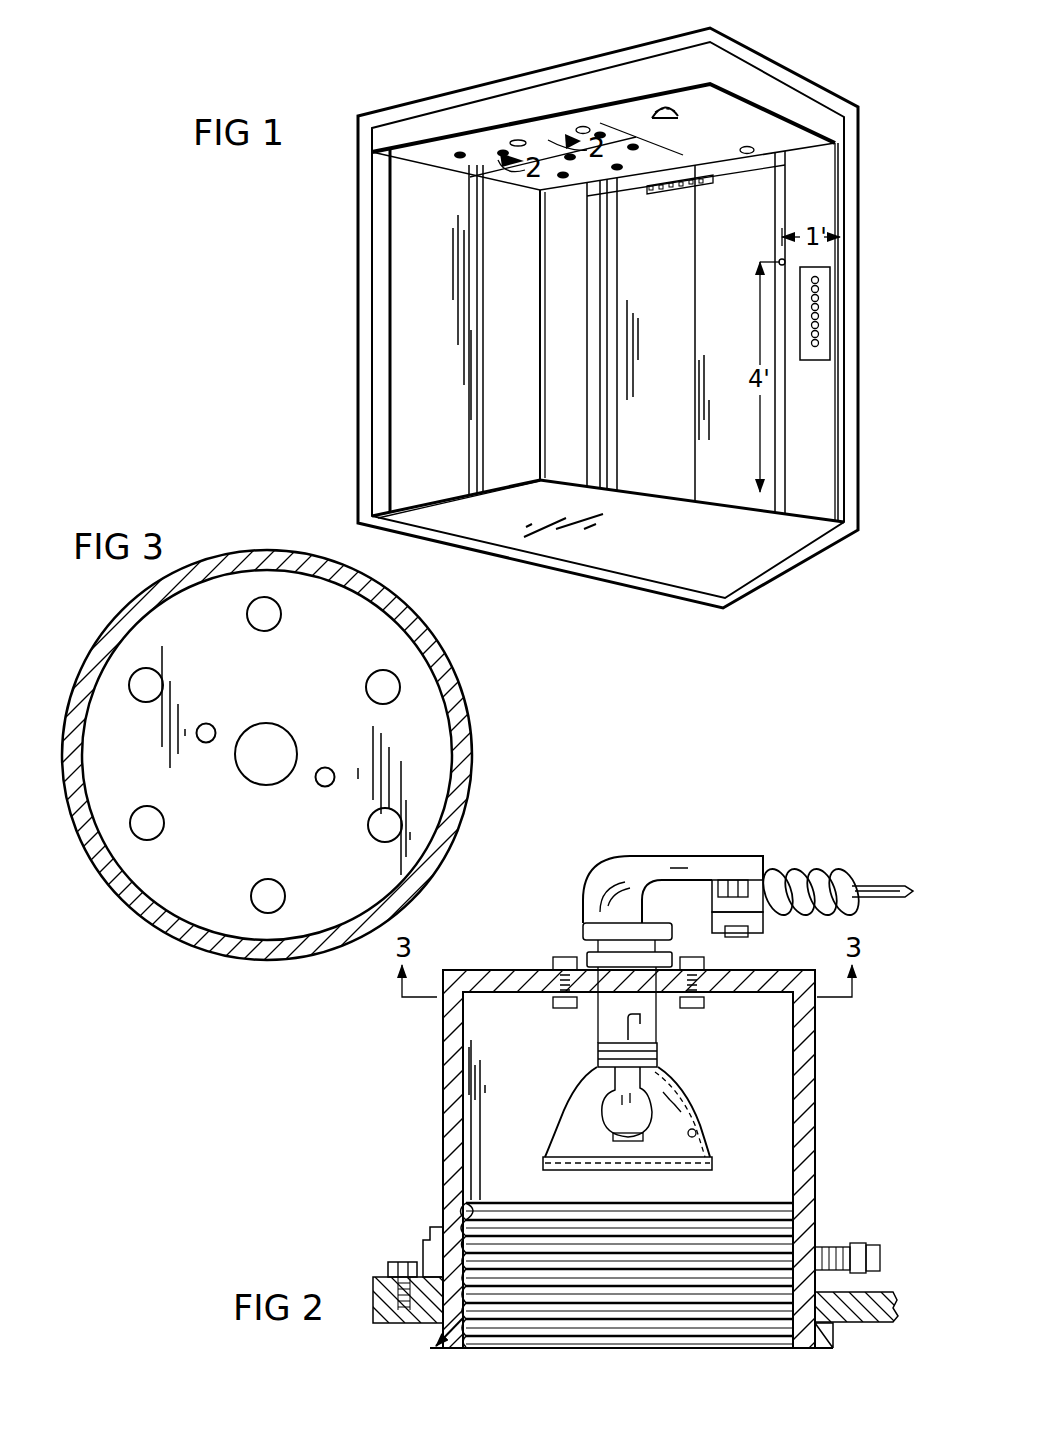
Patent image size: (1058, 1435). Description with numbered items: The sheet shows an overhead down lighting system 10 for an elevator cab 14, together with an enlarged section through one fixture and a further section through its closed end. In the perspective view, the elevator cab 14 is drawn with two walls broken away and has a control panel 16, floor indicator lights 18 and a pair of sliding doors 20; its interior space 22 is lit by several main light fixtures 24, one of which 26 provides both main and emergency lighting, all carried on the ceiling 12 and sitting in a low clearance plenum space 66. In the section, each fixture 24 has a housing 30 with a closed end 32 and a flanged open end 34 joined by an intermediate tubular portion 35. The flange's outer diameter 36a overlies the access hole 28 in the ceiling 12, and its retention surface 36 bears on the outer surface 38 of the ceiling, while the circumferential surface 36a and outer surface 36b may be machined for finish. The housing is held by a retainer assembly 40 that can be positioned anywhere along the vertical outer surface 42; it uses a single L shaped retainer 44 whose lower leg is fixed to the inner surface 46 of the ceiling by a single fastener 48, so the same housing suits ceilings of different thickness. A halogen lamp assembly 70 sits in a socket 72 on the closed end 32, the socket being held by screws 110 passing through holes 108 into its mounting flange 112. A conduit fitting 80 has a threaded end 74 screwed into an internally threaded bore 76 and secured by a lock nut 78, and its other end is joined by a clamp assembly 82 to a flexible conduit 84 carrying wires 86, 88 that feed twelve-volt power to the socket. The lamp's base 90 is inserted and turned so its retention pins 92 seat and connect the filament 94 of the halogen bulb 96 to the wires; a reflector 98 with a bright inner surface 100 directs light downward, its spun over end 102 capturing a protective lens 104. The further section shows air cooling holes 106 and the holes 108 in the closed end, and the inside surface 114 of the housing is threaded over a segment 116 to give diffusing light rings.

In FIG. 1, the down lighting system 10 is at (800, 108).
In FIG. 1, the ceiling 12 is at (762, 102).
In FIG. 2, the ceiling 12 is at (373, 1312).
In FIG. 1, the elevator cab 14 is at (858, 278).
In FIG. 1, the control panel 16 is at (833, 333).
In FIG. 1, the floor indicator lights 18 is at (701, 200).
In FIG. 1, the sliding doors 20 is at (757, 500).
In FIG. 1, the interior space 22 is at (587, 458).
In FIG. 1, the main light fixtures 24 is at (514, 138).
In FIG. 2, the main light fixtures 24 is at (826, 1047).
In FIG. 1, the main and emergency light fixture 26 is at (747, 158).
In FIG. 1, the access holes 28 is at (728, 44).
In FIG. 2, the access holes 28 is at (803, 1320).
In FIG. 2, the housing 30 is at (445, 1092).
In FIG. 3, the closed end 32 is at (145, 642).
In FIG. 2, the closed end 32 is at (495, 978).
In FIG. 2, the flanged open end 34 is at (828, 1349).
In FIG. 2, the intermediate tubular portion 35 is at (445, 1124).
In FIG. 2, the retention surface 36 is at (428, 1320).
In FIG. 2, the outer diameter 36a is at (430, 1350).
In FIG. 2, the outer surface 36b is at (450, 1350).
In FIG. 2, the outer surface of the ceiling 38 is at (866, 1322).
In FIG. 2, the retainer assembly 40 is at (830, 1238).
In FIG. 2, the vertical outer surface 42 is at (817, 1098).
In FIG. 2, the L shaped retainer 44 is at (468, 1207).
In FIG. 2, the inner surface of the ceiling 46 is at (380, 1296).
In FIG. 2, the fastener 48 is at (398, 1262).
In FIG. 1, the low clearance plenum space 66 is at (578, 88).
In FIG. 2, the halogen lamp assembly 70 is at (672, 1054).
In FIG. 2, the socket 72 is at (703, 985).
In FIG. 2, the threaded end 74 is at (566, 958).
In FIG. 3, the internally threaded bore 76 is at (276, 735).
In FIG. 2, the internally threaded bore 76 is at (620, 1000).
In FIG. 2, the lock nut 78 is at (590, 956).
In FIG. 2, the conduit fitting 80 is at (632, 877).
In FIG. 2, the clamp assembly 82 is at (710, 885).
In FIG. 2, the flexible conduit 84 is at (788, 876).
In FIG. 2, the wire 86 is at (867, 884).
In FIG. 2, the wire 88 is at (866, 900).
In FIG. 2, the base 90 is at (600, 1057).
In FIG. 2, the retention pins 92 is at (656, 1012).
In FIG. 2, the filament 94 is at (652, 1102).
In FIG. 2, the halogen bulb 96 is at (637, 1172).
In FIG. 2, the reflector 98 is at (700, 1084).
In FIG. 2, the bright inner surface 100 is at (697, 1133).
In FIG. 2, the spun over end 102 is at (707, 1166).
In FIG. 2, the protective lens 104 is at (612, 1170).
In FIG. 3, the air cooling holes 106 is at (262, 607).
In FIG. 3, the holes 108 is at (319, 777).
In FIG. 2, the screws 110 is at (553, 1013).
In FIG. 2, the mounting flange 112 is at (552, 1003).
In FIG. 2, the inside surface 114 is at (474, 1170).
In FIG. 2, the threaded segment 116 is at (790, 1282).